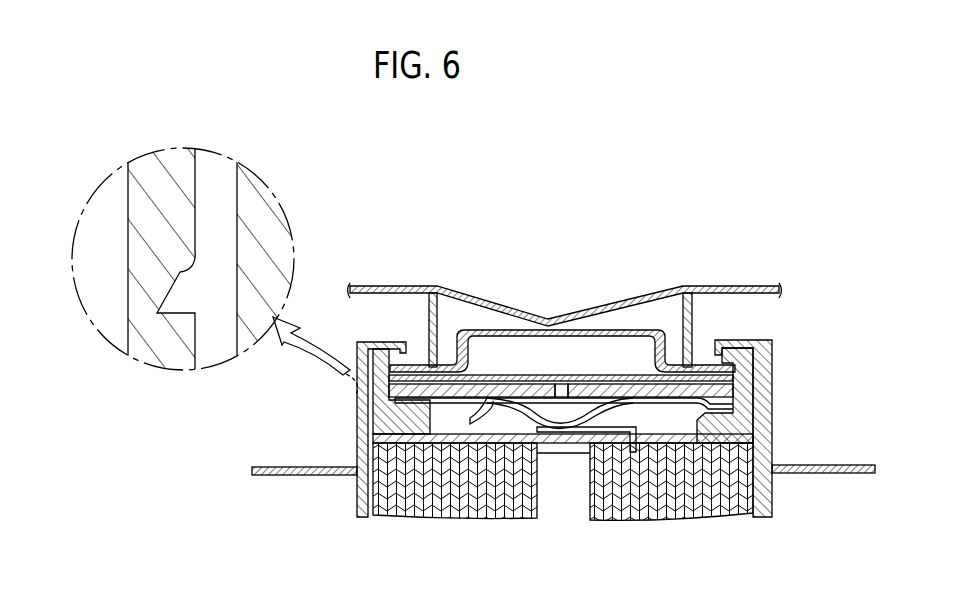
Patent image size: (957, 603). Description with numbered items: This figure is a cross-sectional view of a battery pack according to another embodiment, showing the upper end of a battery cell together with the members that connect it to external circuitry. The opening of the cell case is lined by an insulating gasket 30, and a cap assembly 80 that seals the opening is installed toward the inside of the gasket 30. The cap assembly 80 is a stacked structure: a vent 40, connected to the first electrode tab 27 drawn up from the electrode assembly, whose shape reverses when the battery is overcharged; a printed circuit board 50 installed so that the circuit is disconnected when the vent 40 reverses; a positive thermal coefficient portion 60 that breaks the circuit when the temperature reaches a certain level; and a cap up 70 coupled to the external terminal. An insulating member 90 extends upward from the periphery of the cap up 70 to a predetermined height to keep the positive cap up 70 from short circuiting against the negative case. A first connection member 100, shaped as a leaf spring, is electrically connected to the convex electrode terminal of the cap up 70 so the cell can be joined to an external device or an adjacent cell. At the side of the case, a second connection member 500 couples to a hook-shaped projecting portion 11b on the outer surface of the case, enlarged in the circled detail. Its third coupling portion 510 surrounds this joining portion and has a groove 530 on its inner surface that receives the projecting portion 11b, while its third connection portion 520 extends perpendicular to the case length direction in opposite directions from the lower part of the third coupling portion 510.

The projecting portion 11b is at (180, 290).
The first electrode tab 27 is at (750, 421).
The insulating gasket 30 is at (753, 354).
The vent 40 is at (503, 392).
The printed circuit board 50 is at (605, 392).
The positive thermal coefficient portion 60 is at (663, 328).
The cap up 70 is at (500, 333).
The cap assembly 80 is at (663, 232).
The insulating member 90 is at (430, 316).
The first connection member 100 is at (732, 285).
The second connection member 500 is at (195, 403).
The third coupling portion 510 is at (357, 421).
The third connection portion 520 is at (277, 467).
The groove 530 is at (186, 262).